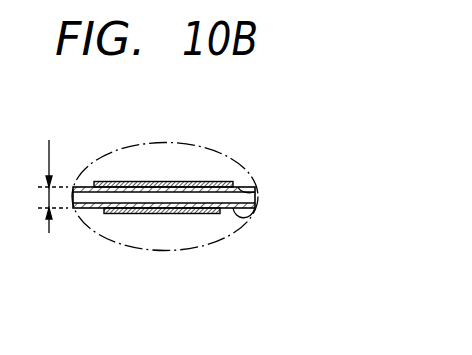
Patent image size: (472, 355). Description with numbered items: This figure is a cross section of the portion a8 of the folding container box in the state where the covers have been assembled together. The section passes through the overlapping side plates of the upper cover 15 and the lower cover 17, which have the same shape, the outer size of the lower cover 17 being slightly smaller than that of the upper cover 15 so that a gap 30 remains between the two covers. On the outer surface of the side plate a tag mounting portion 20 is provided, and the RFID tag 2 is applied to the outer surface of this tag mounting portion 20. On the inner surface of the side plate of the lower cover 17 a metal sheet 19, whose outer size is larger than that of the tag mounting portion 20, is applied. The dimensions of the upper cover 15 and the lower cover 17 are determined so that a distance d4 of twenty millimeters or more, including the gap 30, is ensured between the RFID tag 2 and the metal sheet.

The RFID tag 2 is at (148, 214).
The upper cover 15 is at (243, 220).
The lower cover 17 is at (255, 193).
The metal sheet 19 is at (177, 181).
The tag mounting portion 20 is at (90, 210).
The gap 30 is at (74, 200).
The portion a8 is at (203, 247).
The distance d4 is at (43, 186).